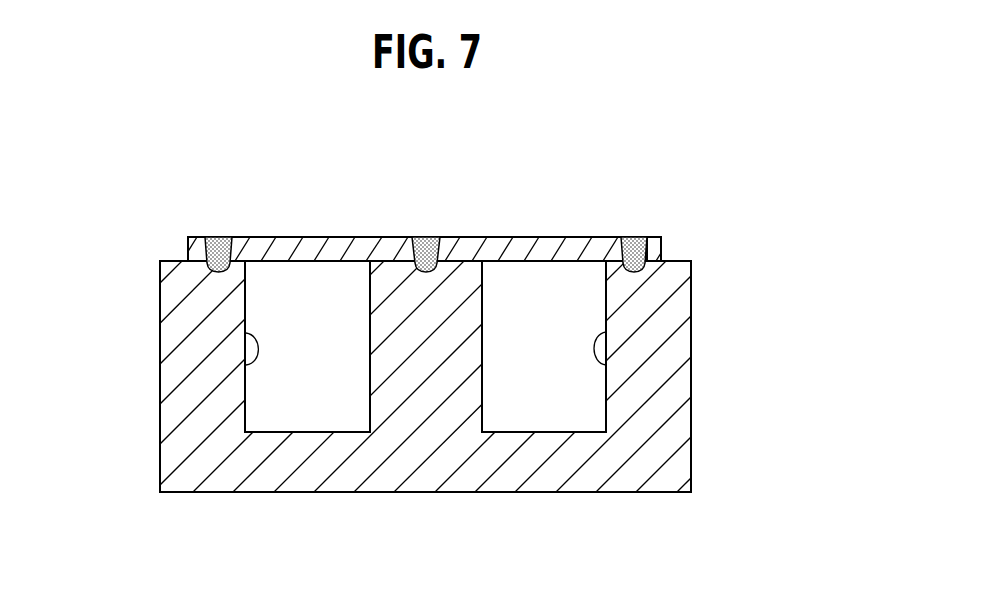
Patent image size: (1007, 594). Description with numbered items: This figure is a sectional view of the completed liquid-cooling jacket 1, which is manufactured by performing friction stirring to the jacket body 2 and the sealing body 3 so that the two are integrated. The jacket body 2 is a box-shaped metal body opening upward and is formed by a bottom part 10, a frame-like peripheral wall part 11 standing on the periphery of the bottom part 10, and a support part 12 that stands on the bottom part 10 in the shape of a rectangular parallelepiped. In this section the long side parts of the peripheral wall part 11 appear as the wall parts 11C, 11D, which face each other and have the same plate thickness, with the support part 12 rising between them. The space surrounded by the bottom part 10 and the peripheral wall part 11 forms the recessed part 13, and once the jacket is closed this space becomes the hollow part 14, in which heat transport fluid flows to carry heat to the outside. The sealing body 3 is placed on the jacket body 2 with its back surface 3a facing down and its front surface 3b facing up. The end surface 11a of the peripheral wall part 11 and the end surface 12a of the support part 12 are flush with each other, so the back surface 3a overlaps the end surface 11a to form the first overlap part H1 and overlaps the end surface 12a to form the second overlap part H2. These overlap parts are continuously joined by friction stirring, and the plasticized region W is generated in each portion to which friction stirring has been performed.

The liquid-cooling jacket 1 is at (708, 177).
The jacket body 2 is at (440, 500).
The sealing body 3 is at (348, 222).
The back surface 3a is at (508, 265).
The front surface 3b is at (285, 237).
The bottom part 10 is at (540, 477).
The peripheral wall part 11 is at (255, 237).
The end surface 11a is at (658, 237).
The wall part 11C is at (188, 399).
The wall part 11D is at (667, 392).
The support part 12 is at (490, 226).
The end surface 12a is at (477, 237).
The recessed part 13 is at (427, 341).
The hollow part 14 is at (247, 333).
The plasticized region W is at (218, 237).
The first overlap part H1 is at (253, 266).
The second overlap part H2 is at (362, 267).